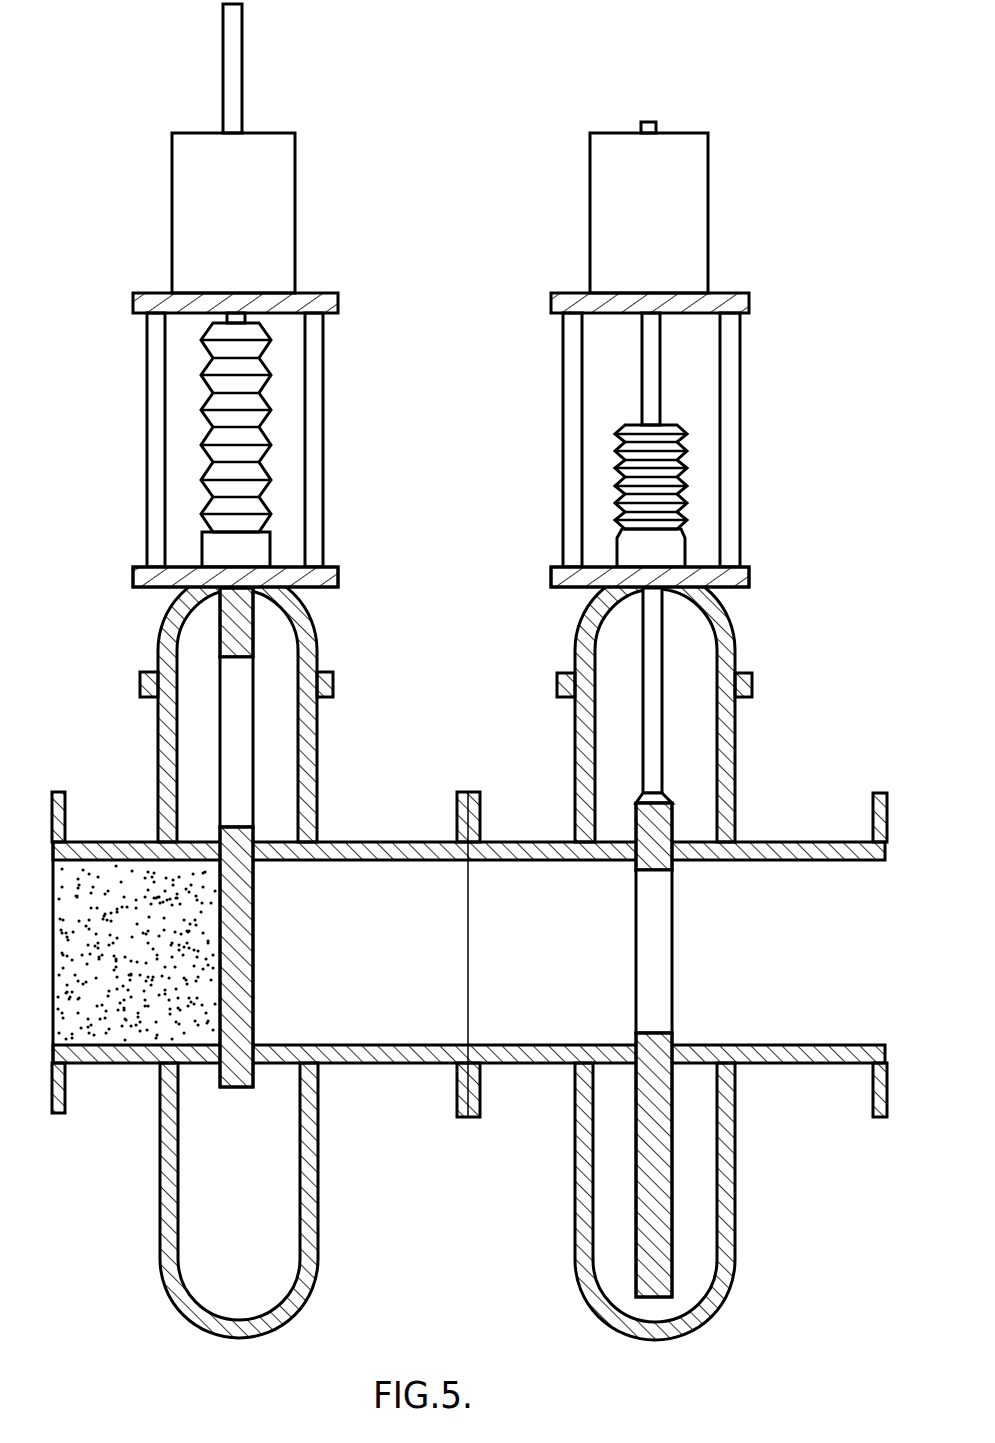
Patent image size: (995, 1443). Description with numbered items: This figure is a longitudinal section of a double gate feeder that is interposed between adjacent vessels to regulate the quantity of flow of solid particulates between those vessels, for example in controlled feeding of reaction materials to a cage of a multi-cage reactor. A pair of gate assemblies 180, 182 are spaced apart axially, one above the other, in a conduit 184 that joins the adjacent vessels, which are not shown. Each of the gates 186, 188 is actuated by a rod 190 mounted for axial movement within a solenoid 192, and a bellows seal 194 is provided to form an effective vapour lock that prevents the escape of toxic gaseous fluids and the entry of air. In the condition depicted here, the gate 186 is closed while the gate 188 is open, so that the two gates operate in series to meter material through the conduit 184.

The gate assembly 180 is at (328, 766).
The gate assembly 182 is at (750, 766).
The conduit 184 is at (351, 1063).
The gate 186 is at (258, 978).
The gate 188 is at (673, 1045).
The rod 190 is at (232, 73).
The solenoid 192 is at (289, 220).
The bellows seal 194 is at (257, 453).